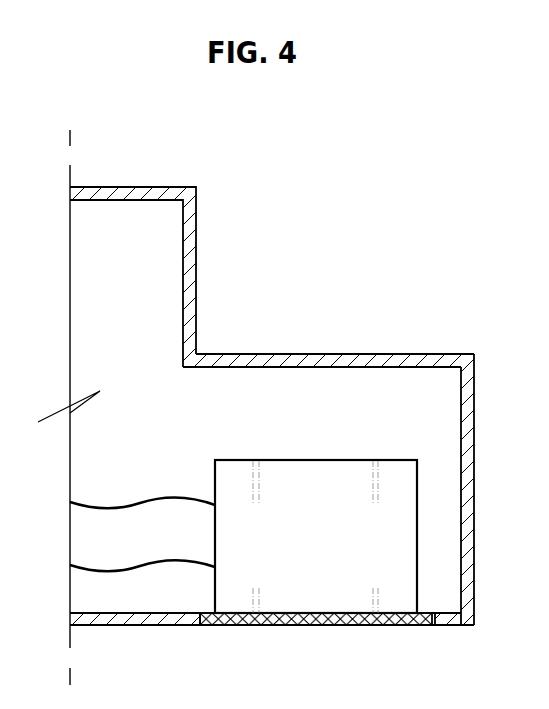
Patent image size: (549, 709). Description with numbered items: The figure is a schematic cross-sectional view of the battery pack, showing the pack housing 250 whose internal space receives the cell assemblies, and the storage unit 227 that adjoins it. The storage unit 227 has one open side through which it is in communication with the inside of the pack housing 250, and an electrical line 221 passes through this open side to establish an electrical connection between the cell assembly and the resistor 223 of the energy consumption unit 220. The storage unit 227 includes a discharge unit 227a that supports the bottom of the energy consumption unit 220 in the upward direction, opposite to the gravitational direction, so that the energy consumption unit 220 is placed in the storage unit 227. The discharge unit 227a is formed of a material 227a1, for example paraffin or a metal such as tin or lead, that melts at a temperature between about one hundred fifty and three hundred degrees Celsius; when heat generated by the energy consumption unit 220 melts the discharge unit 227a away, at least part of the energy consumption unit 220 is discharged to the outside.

The pack housing 250 is at (142, 187).
The energy consumption unit 220 is at (340, 324).
The storage unit 227 is at (421, 354).
The discharge unit 227a is at (386, 629).
The material 227a1 is at (308, 625).
The resistor 223 is at (325, 460).
The electrical line 221 is at (177, 496).